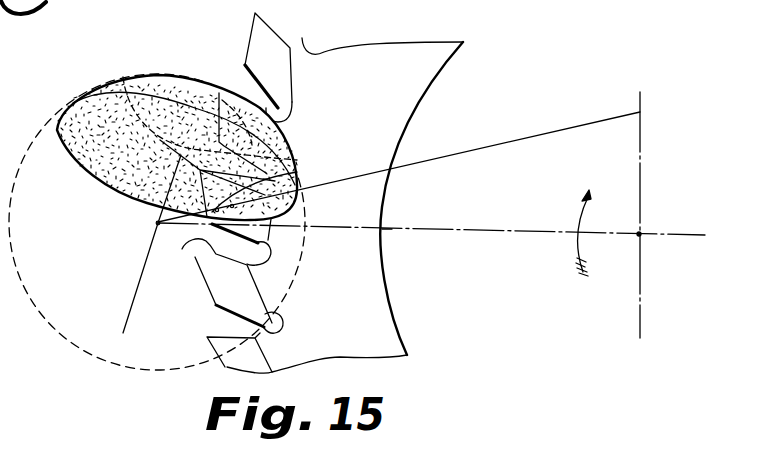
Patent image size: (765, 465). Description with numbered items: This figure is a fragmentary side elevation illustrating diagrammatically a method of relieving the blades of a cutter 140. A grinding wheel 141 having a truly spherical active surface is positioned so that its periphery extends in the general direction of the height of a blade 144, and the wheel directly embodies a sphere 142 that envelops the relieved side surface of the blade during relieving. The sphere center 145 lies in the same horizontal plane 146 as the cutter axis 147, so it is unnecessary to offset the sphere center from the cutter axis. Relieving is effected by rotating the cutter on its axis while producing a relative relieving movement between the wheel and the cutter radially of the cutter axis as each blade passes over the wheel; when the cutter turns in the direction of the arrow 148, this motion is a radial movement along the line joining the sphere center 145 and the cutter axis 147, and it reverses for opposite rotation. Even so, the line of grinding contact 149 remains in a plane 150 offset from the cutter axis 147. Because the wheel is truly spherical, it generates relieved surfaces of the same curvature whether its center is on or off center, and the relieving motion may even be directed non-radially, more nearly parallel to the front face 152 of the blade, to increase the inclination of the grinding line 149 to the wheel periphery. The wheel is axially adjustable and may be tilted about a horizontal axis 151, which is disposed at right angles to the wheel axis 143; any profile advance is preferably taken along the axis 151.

The cutter 140 is at (375, 302).
The grinding wheel 141 is at (108, 180).
The sphere 142 is at (86, 352).
The wheel axis 143 is at (131, 312).
The blade 144 is at (255, 48).
The sphere center 145 is at (157, 223).
The horizontal plane 146 is at (428, 229).
The cutter axis 147 is at (641, 232).
The arrow 148 is at (575, 215).
The line of grinding contact 149 is at (290, 167).
The plane 150 is at (487, 139).
The tilt axis 151 is at (388, 233).
The front face of blade 152 is at (218, 286).